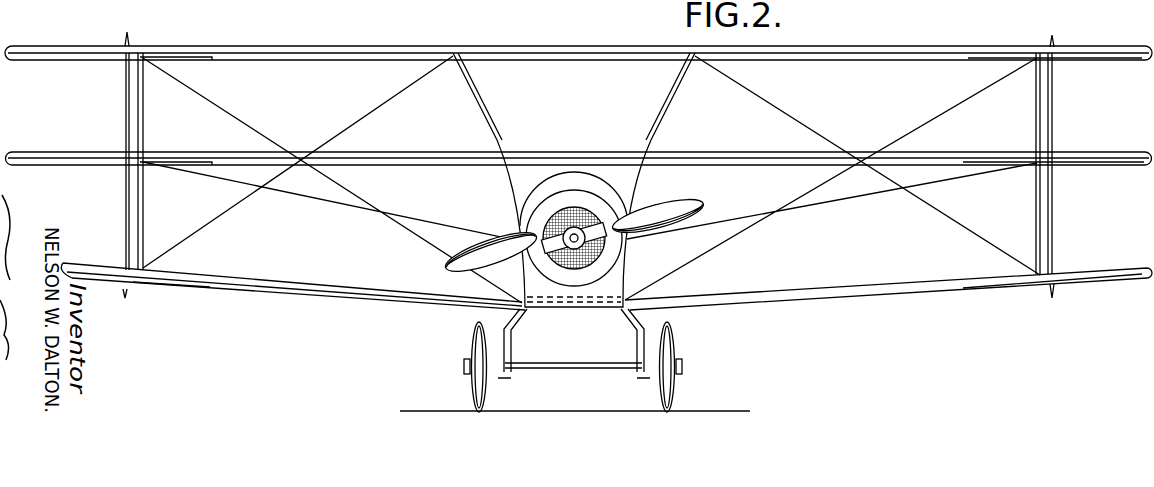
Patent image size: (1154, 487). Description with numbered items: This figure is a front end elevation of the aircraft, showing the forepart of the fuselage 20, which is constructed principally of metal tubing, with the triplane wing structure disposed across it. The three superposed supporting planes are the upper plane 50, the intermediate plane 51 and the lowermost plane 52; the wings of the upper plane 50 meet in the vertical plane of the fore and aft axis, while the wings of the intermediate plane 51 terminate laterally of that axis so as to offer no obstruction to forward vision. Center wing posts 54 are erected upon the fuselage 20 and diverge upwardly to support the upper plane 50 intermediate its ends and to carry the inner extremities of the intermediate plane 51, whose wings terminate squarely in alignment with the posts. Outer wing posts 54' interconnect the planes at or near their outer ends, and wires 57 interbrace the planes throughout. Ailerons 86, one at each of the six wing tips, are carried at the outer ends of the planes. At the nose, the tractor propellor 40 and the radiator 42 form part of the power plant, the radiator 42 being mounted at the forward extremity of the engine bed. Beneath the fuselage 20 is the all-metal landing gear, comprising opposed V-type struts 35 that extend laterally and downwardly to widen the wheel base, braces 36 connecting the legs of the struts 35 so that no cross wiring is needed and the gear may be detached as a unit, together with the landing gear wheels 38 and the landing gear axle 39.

The fuselage 20 is at (516, 212).
The V-type struts 35 is at (635, 326).
The braces 36 is at (553, 305).
The landing gear wheels 38 is at (674, 338).
The landing gear axle 39 is at (550, 370).
The tractor propellor 40 is at (682, 212).
The radiator 42 is at (600, 257).
The upper plane 50 is at (567, 52).
The intermediate plane 51 is at (955, 158).
The lowermost plane 52 is at (853, 285).
The center wing posts 54 is at (564, 98).
The wing posts 54' is at (617, 163).
The wires 57 is at (338, 133).
The ailerons 86 is at (78, 164).